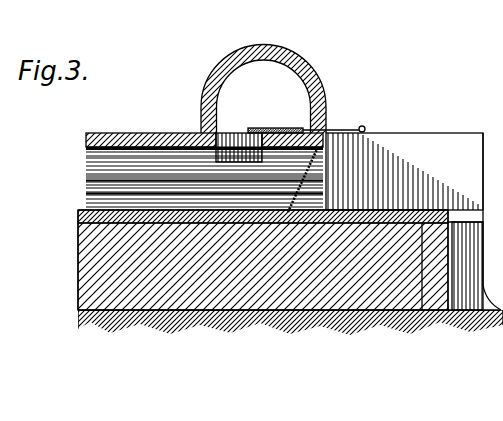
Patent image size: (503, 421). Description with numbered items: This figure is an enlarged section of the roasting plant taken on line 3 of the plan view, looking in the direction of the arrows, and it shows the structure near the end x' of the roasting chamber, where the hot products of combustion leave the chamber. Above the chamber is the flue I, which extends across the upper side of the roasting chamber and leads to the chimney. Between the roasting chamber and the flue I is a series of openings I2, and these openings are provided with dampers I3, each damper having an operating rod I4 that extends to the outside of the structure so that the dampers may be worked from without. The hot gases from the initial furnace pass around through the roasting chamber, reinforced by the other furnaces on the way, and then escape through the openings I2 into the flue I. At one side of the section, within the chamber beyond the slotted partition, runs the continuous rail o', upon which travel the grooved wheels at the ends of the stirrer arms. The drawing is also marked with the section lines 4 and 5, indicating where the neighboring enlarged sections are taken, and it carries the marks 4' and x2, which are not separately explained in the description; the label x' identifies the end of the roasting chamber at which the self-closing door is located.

The flue I is at (263, 89).
The openings I2 is at (222, 135).
The dampers I3 is at (282, 128).
The operating rods I4 is at (367, 112).
The section line 3 is at (303, 197).
The section line 4 is at (263, 210).
The layer plate 4' is at (204, 222).
The section line 5 is at (303, 179).
The continuous rail o' is at (414, 221).
The end of the roasting chamber x' is at (263, 69).
The foundation block x2 is at (290, 275).